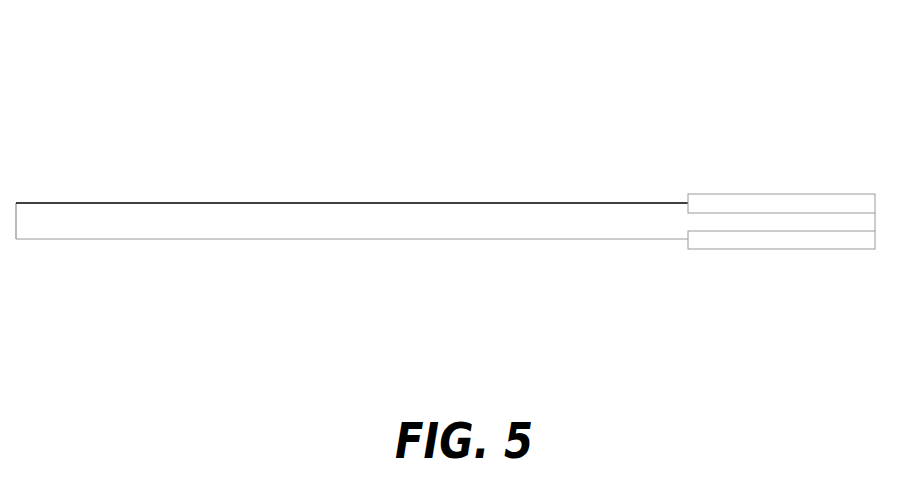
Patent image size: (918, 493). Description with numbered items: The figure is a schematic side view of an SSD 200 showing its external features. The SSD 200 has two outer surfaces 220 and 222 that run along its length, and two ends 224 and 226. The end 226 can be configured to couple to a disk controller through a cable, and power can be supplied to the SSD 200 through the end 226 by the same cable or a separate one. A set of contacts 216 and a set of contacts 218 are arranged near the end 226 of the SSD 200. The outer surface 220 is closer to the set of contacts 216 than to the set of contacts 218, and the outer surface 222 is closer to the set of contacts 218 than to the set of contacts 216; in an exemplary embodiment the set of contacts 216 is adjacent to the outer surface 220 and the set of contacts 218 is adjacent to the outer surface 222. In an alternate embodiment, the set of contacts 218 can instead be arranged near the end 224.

The SSD 200 is at (612, 111).
The set of contacts 216 is at (782, 194).
The set of contacts 218 is at (782, 249).
The outer surface 220 is at (380, 203).
The outer surface 222 is at (380, 239).
The end 224 is at (16, 222).
The end 226 is at (875, 222).